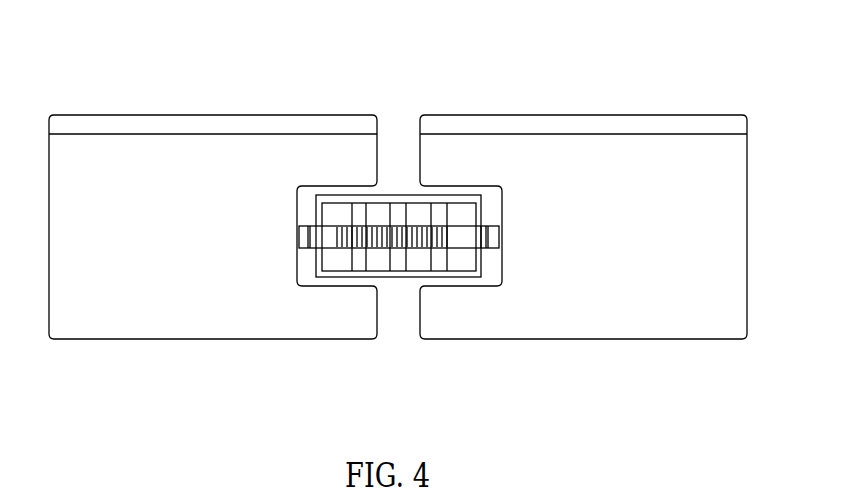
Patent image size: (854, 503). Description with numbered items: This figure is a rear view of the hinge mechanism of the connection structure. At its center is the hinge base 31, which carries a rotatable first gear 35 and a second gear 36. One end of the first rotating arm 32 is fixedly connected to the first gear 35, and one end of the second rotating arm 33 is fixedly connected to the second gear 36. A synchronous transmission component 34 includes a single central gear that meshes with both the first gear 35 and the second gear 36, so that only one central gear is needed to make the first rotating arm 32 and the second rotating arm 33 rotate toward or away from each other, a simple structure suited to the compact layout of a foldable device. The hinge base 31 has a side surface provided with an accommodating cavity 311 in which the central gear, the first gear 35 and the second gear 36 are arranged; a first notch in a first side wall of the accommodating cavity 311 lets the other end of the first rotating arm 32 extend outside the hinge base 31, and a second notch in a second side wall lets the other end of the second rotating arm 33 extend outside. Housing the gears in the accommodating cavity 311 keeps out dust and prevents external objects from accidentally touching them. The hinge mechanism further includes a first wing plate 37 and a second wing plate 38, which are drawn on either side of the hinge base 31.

The hinge base 31 is at (397, 195).
The accommodating cavity 311 is at (460, 217).
The first rotating arm 32 is at (488, 242).
The second rotating arm 33 is at (310, 240).
The synchronous transmission component 34 is at (401, 253).
The first gear 35 is at (430, 265).
The second gear 36 is at (360, 250).
The first wing plate 37 is at (607, 310).
The second wing plate 38 is at (168, 300).